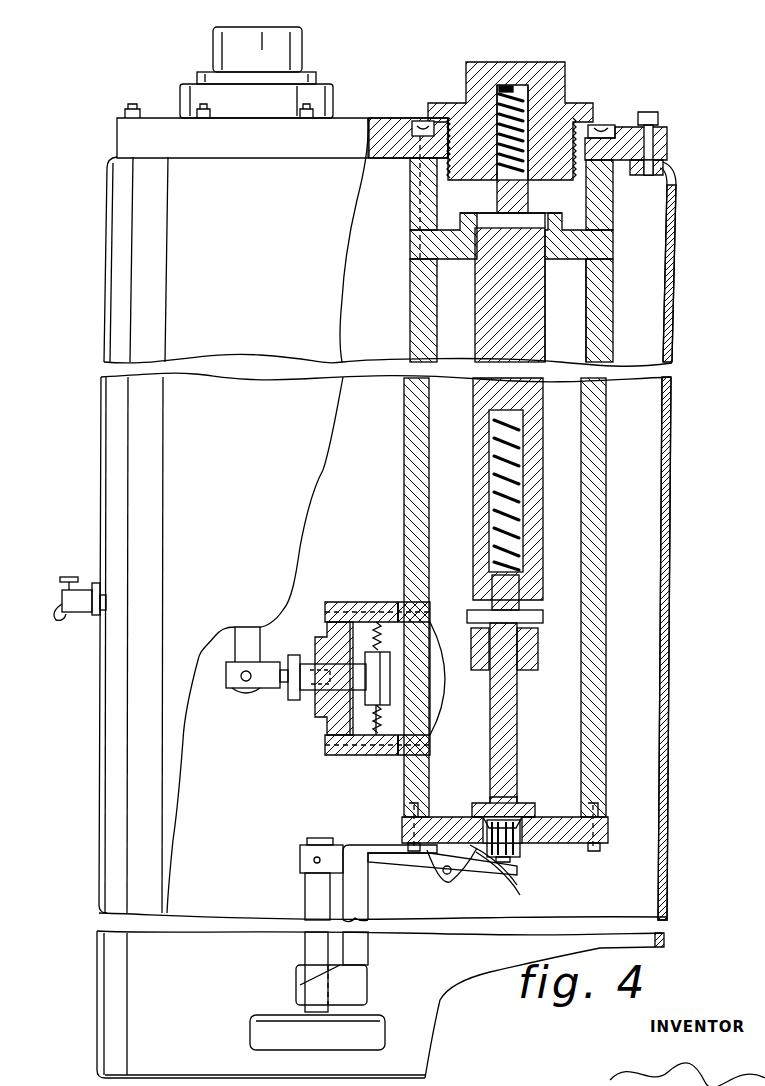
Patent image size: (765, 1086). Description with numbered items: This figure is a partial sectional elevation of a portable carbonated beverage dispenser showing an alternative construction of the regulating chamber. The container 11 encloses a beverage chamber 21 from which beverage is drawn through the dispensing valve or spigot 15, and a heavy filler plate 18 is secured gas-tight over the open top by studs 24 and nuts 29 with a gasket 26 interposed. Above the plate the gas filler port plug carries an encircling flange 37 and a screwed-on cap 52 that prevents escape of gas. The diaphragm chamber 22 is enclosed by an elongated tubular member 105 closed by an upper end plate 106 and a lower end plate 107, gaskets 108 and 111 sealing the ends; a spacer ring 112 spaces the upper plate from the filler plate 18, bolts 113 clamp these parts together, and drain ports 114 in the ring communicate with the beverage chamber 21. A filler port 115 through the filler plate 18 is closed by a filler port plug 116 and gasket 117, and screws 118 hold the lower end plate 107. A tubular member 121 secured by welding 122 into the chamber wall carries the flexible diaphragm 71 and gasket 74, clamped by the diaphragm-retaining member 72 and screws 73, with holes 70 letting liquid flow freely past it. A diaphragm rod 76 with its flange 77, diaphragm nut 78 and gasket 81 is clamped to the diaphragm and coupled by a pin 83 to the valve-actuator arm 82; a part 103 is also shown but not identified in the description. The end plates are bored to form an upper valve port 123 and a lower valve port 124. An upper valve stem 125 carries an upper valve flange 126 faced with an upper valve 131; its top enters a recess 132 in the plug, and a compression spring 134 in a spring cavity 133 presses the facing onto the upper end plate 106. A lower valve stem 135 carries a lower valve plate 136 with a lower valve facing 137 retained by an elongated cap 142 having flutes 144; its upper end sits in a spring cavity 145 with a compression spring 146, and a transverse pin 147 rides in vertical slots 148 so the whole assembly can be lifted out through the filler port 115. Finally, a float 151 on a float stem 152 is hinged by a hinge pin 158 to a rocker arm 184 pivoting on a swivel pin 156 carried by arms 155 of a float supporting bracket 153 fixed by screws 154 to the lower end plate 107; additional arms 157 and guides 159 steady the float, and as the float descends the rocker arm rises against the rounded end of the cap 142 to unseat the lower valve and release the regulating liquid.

The container 11 is at (674, 312).
The dispensing valve or spigot 15 is at (70, 612).
The filler plate 18 is at (377, 131).
The beverage chamber 21 is at (655, 403).
The diaphragm chamber 22 is at (575, 302).
The studs 24 is at (130, 107).
The gasket 26 is at (107, 163).
The nuts 29 is at (142, 107).
The encircling flange 37 is at (333, 96).
The cap 52 is at (303, 36).
The holes 70 is at (366, 606).
The flexible diaphragm 71 is at (382, 647).
The diaphragm-retaining member 72 is at (320, 712).
The bolts or screws 73 is at (325, 751).
The gasket 74 is at (380, 735).
The diaphragm rod 76 is at (258, 684).
The encircling flange 77 is at (390, 661).
The diaphragm nut 78 is at (292, 700).
The gasket 81 is at (383, 684).
The valve-actuator arm 82 is at (254, 646).
The pin 83 is at (243, 681).
The pin 103 is at (240, 668).
The tubular member 105 is at (598, 568).
The upper end plate 106 is at (610, 253).
The lower end plate 107 is at (598, 835).
The gasket 108 is at (610, 260).
The gasket 111 is at (606, 818).
The spacer ring 112 is at (613, 200).
The bolts 113 is at (622, 124).
The drain ports 114 is at (410, 170).
The filler port 115 is at (437, 120).
The filler port plug 116 is at (480, 62).
The gasket 117 is at (597, 124).
The screws 118 is at (592, 851).
The tubular member 121 is at (388, 756).
The welding 122 is at (405, 603).
The upper valve port 123 is at (437, 262).
The lower valve port 124 is at (521, 846).
The upper valve stem 125 is at (540, 338).
The upper valve flange 126 is at (460, 222).
The upper valve 131 is at (573, 212).
The recess 132 is at (520, 94).
The spring cavity 133 is at (525, 108).
The compression spring 134 is at (512, 86).
The lower valve stem 135 is at (512, 720).
The lower valve plate 136 is at (522, 802).
The lower valve facing 137 is at (530, 814).
The cap 142 is at (508, 862).
The longitudinal grooves or flutes 144 is at (510, 858).
The spring cavity 145 is at (522, 515).
The compression spring 146 is at (505, 445).
The transverse pin 147 is at (543, 616).
The vertical slots 148 is at (530, 608).
The float 151 is at (382, 1030).
The float stem 152 is at (305, 949).
The float supporting bracket 153 is at (362, 847).
The screws 154 is at (470, 856).
The arms 155 is at (440, 866).
The swivel pin 156 is at (447, 876).
The additional arms 157 is at (296, 983).
The hinge pin 158 is at (313, 860).
The guides 159 is at (300, 985).
The rocker arm 184 is at (340, 856).